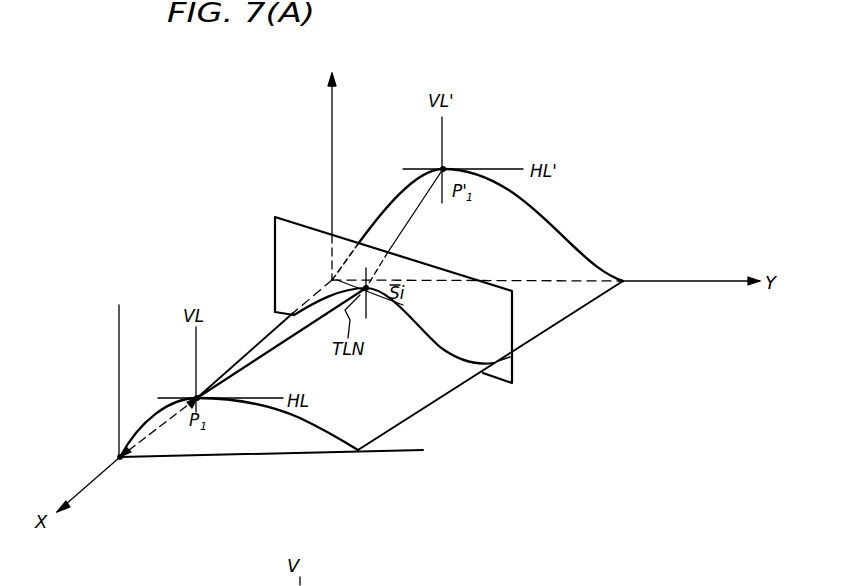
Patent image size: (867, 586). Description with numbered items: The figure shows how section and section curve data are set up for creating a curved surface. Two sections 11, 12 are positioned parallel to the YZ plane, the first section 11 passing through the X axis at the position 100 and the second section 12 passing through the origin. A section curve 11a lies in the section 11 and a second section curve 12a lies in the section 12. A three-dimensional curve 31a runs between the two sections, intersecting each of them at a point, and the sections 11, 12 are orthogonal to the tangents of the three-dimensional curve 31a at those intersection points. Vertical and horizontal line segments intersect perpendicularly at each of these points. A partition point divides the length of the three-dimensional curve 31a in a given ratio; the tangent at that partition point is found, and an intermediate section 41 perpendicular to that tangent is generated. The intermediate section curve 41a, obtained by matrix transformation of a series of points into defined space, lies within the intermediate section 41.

The section 11 is at (125, 387).
The section 12 is at (337, 148).
The section curve 11a is at (312, 433).
The section curve 12a is at (570, 240).
The three-dimensional curve 31a is at (274, 349).
The intermediate section 41 is at (513, 377).
The intermediate section curve 41a is at (455, 358).
The X-axis position of section 100 is at (131, 471).